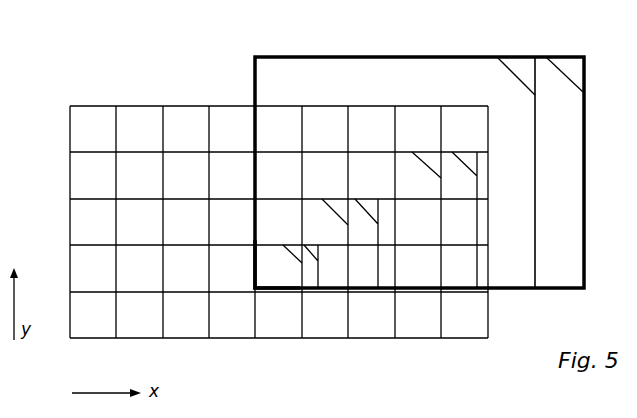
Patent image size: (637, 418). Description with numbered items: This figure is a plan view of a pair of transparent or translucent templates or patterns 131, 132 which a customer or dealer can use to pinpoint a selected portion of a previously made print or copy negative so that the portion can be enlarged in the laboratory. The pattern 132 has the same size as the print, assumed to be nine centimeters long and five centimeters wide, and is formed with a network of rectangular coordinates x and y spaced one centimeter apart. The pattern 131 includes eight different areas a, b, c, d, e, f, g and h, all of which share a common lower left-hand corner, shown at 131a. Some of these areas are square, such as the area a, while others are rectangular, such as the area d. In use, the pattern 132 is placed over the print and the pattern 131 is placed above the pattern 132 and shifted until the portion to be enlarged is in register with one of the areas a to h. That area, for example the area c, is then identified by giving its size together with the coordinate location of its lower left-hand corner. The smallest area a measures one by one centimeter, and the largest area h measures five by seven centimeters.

The pattern 131 is at (250, 73).
The common lower left-hand corner 131a is at (253, 290).
The pattern 132 is at (89, 102).
The area a is at (292, 254).
The area b is at (311, 266).
The area c is at (335, 212).
The area d is at (366, 243).
The area e is at (426, 165).
The area f is at (464, 220).
The area g is at (516, 76).
The area h is at (564, 74).